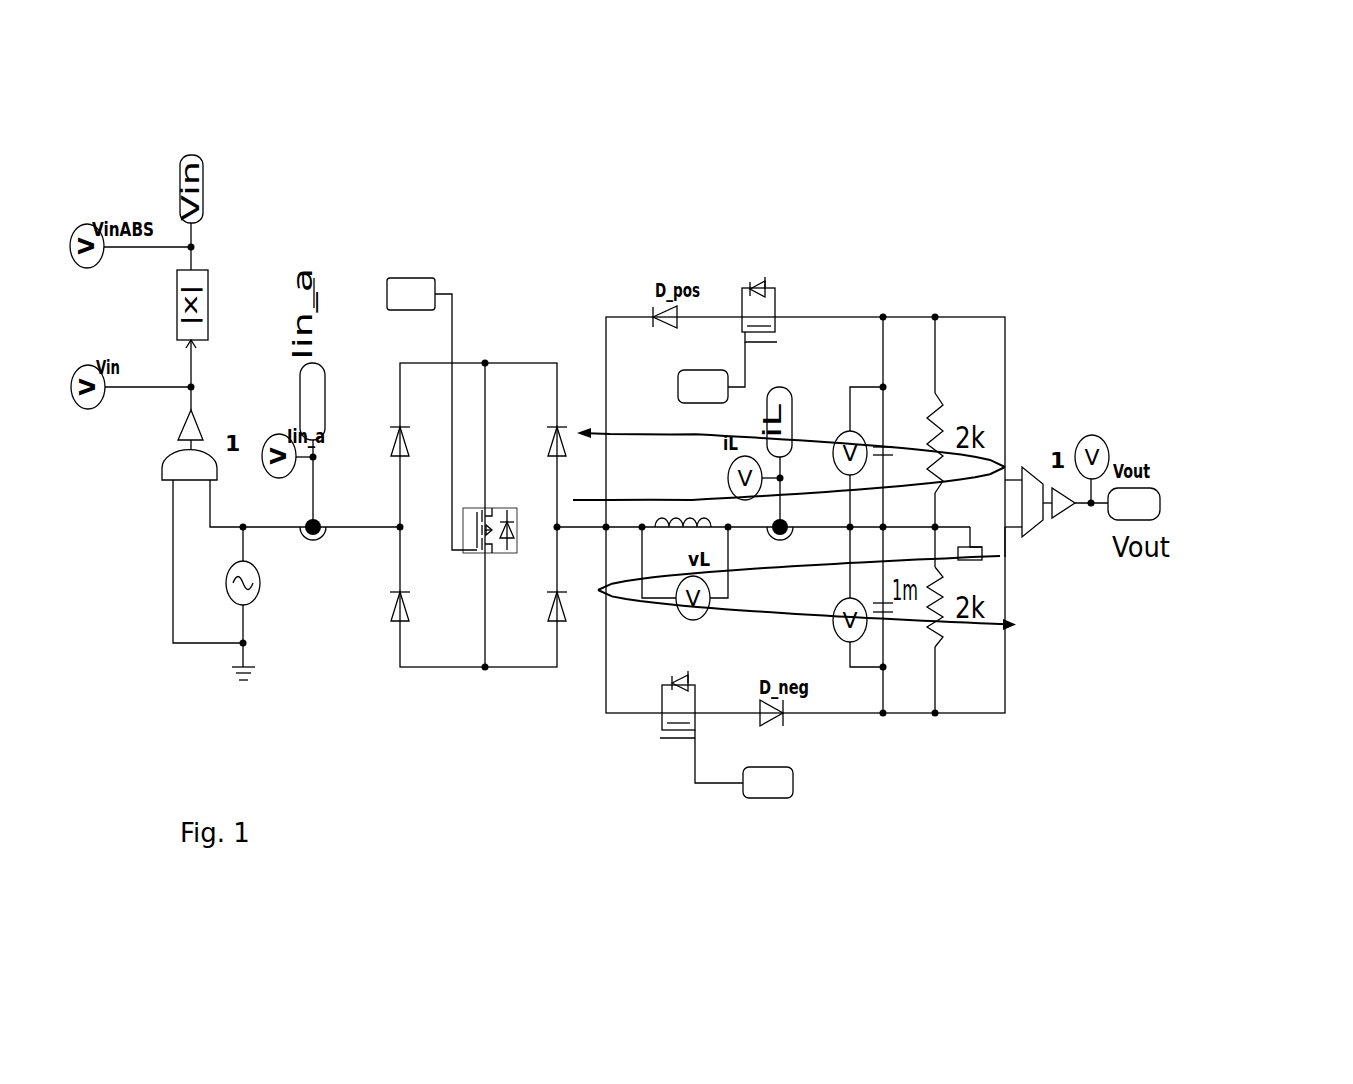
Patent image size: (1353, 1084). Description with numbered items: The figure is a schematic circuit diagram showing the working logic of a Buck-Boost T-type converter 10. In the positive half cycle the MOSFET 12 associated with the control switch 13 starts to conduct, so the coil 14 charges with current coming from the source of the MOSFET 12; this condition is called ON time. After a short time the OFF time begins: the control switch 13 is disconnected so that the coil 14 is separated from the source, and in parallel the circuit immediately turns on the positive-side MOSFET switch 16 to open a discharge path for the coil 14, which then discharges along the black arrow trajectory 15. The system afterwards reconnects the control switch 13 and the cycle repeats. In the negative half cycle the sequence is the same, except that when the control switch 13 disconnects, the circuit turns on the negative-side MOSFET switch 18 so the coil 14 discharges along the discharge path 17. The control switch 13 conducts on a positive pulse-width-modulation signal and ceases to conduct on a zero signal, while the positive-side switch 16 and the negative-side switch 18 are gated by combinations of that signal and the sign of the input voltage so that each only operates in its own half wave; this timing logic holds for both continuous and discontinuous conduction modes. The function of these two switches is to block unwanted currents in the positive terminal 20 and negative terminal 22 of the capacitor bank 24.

The Buck-Boost T-type converter 10 is at (1065, 259).
The MOSFET 12 is at (484, 551).
The A_SW switch 13 is at (405, 292).
The coil 14 is at (667, 513).
The black arrow trajectory 15 is at (983, 455).
The MOSFET B_pos switch 16 is at (707, 386).
The discharge path 17 is at (967, 560).
The MOSFET B_neg switch 18 is at (777, 786).
The positive terminal 20 is at (842, 431).
The negative terminal 22 is at (857, 648).
The capacitor bank 24 is at (896, 396).